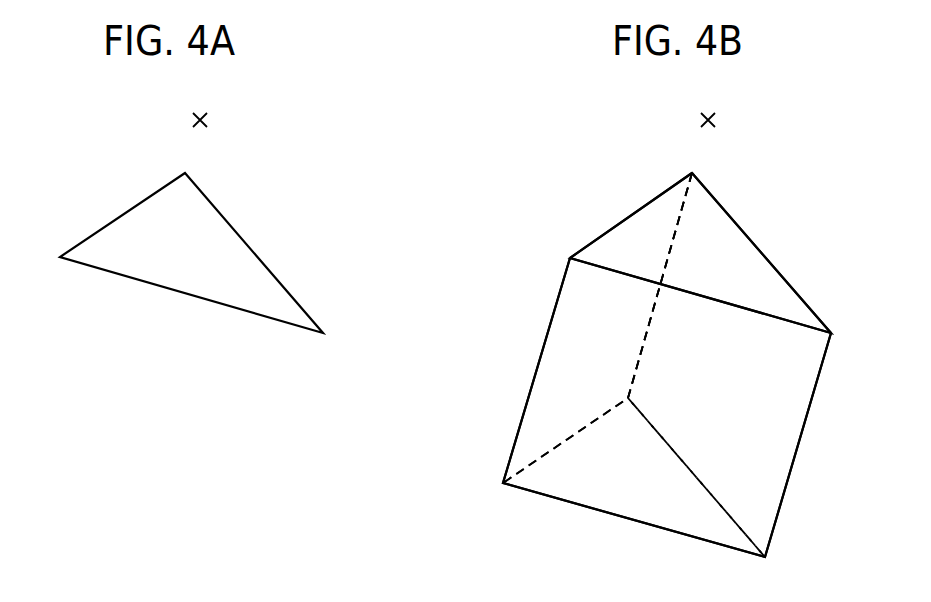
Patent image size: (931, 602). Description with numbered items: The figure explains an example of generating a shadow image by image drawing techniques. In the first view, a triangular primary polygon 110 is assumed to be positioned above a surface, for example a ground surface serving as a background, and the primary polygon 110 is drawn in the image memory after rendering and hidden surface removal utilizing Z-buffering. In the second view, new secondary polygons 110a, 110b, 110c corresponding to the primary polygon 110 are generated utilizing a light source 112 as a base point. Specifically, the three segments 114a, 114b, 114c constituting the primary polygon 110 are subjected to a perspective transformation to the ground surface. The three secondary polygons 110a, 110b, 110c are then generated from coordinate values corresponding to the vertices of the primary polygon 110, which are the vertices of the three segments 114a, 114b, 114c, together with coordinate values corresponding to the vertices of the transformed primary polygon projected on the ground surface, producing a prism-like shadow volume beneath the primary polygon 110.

In FIG. 4A, the primary polygon 110 is at (247, 237).
In FIG. 4B, the primary polygon 110 is at (703, 215).
In FIG. 4A, the light source 112 is at (207, 120).
In FIG. 4B, the light source 112 is at (715, 120).
In FIG. 4B, the secondary polygon 110a is at (580, 405).
In FIG. 4B, the secondary polygon 110b is at (567, 342).
In FIG. 4B, the secondary polygon 110c is at (772, 370).
In FIG. 4B, the segment 114a is at (687, 295).
In FIG. 4B, the segment 114b is at (627, 215).
In FIG. 4B, the segment 114c is at (753, 242).